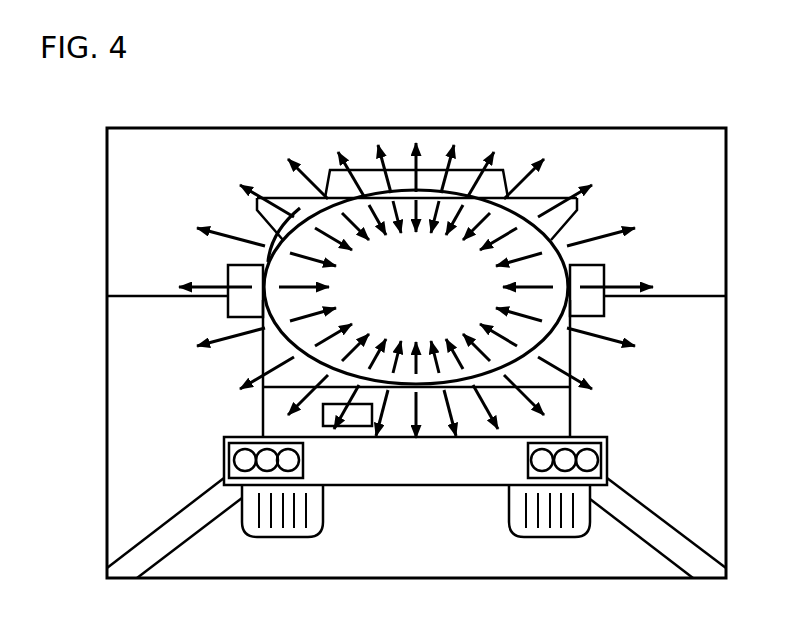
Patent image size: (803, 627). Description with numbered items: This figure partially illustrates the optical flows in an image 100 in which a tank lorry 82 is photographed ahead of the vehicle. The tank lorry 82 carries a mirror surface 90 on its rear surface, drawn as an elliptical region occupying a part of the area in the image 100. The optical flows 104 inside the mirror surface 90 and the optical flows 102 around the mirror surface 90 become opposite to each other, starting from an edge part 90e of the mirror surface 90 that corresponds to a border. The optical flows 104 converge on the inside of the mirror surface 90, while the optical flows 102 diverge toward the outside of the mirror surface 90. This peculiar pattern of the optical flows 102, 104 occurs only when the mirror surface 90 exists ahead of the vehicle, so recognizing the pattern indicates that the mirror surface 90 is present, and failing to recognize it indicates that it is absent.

The image 100 is at (525, 128).
The optical flows 102 is at (307, 180).
The optical flows 104 is at (370, 222).
The mirror surface 90 is at (540, 333).
The edge part 90e is at (285, 243).
The tank lorry 82 is at (262, 416).